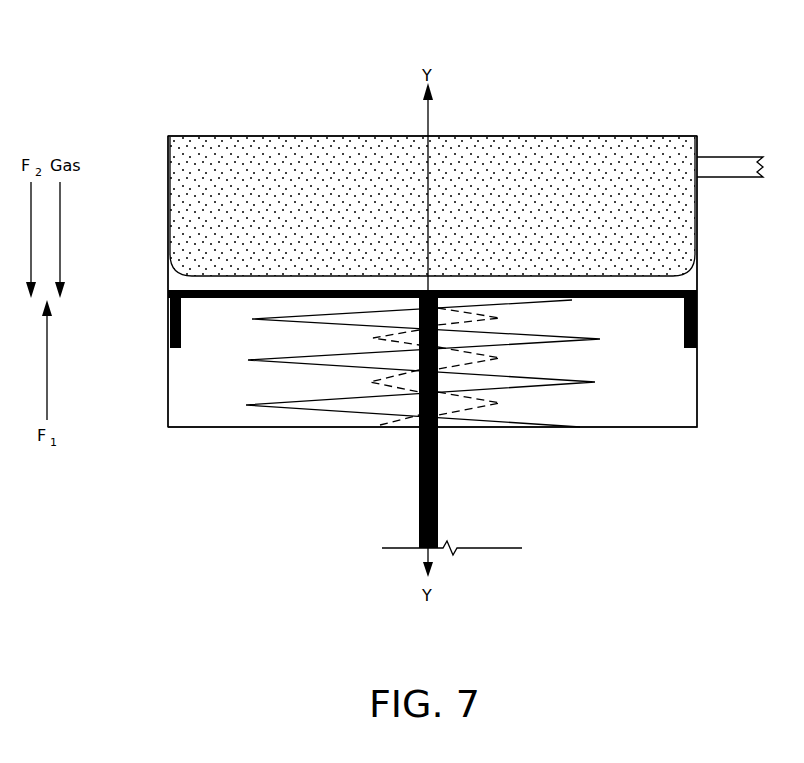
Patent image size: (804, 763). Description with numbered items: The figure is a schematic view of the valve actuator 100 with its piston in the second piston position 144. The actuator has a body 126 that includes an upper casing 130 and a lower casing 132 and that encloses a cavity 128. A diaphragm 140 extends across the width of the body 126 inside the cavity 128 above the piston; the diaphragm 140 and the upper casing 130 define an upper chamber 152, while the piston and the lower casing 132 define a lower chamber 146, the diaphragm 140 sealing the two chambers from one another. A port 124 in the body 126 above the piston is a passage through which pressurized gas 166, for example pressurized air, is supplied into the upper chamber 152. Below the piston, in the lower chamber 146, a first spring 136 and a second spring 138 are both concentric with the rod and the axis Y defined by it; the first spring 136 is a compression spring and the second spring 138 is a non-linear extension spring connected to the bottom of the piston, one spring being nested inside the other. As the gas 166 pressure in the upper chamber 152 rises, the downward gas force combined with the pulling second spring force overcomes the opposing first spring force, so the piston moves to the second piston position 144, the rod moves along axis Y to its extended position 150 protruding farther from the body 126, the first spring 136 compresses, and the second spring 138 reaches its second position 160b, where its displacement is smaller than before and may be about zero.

The valve actuator 100 is at (163, 58).
The port 124 is at (705, 163).
The body 126 is at (603, 135).
The cavity 128 is at (524, 155).
The upper casing 130 is at (180, 136).
The lower casing 132 is at (655, 428).
The first spring 136 is at (600, 380).
The second spring 138 is at (295, 340).
The diaphragm 140 is at (687, 282).
The second piston position 144 is at (702, 292).
The lower chamber 146 is at (183, 387).
The extended position 150 is at (428, 508).
The upper chamber 152 is at (470, 155).
The second position 160b is at (373, 296).
The pressurized gas 166 is at (318, 165).